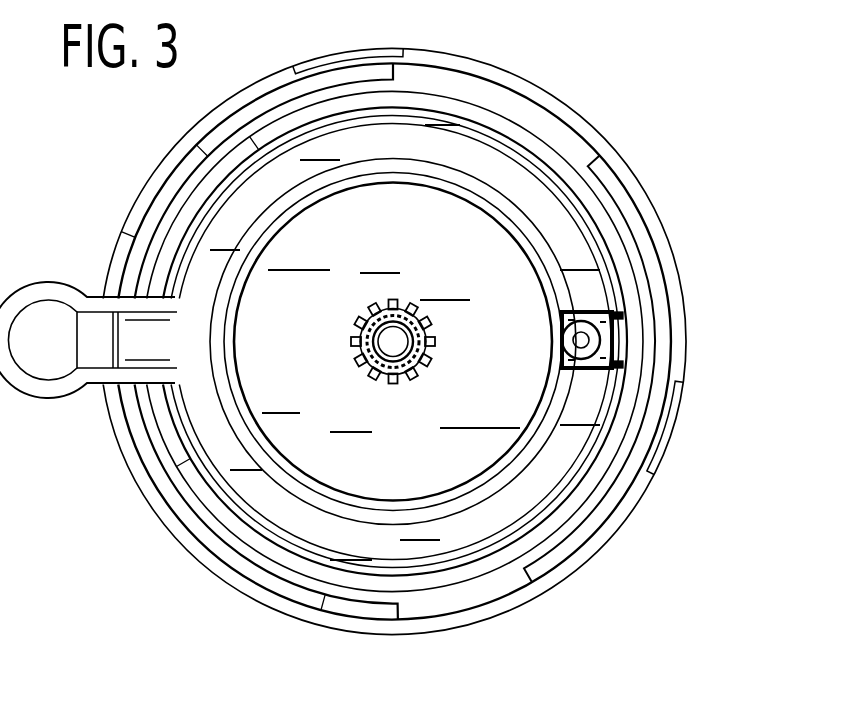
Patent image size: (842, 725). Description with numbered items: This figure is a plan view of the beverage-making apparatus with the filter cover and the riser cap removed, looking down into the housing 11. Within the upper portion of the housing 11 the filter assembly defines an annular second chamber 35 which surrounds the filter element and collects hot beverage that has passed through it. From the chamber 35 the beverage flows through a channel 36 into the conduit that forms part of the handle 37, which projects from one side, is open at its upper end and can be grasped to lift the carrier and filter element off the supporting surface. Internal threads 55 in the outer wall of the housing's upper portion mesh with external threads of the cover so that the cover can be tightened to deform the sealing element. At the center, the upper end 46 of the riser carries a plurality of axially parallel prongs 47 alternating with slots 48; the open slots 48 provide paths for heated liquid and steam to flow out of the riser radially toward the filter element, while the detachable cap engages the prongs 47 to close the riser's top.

The housing 11 is at (631, 513).
The annular second chamber 35 is at (472, 523).
The channel 36 is at (148, 340).
The handle 37 is at (48, 352).
The upper end of the riser 46 is at (392, 283).
The prongs 47 is at (424, 318).
The slots 48 is at (428, 352).
The internal threads 55 is at (647, 428).